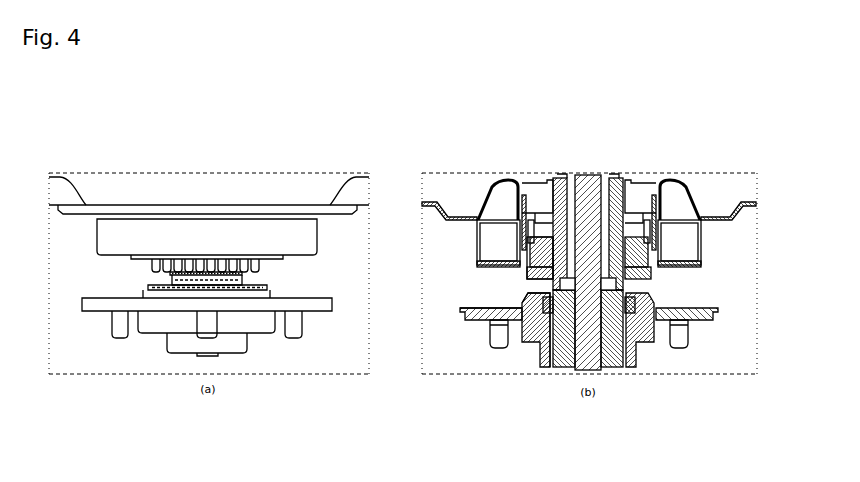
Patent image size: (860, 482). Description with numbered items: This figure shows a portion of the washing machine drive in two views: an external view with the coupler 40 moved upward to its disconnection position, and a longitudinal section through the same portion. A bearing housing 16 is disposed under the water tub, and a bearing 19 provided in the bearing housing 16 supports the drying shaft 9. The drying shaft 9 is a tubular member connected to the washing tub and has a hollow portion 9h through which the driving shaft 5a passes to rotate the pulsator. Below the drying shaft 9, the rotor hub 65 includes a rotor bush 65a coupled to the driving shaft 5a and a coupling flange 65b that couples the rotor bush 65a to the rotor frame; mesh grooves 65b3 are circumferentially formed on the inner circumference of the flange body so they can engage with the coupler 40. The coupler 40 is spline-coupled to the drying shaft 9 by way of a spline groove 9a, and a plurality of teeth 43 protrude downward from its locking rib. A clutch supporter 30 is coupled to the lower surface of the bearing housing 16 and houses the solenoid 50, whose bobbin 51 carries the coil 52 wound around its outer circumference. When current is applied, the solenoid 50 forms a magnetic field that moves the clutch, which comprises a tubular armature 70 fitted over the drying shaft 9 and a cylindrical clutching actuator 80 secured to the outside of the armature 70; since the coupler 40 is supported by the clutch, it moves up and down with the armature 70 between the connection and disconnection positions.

The bearing housing 16 is at (158, 188).
The clutch supporter 30 is at (178, 238).
The coupler 40 is at (247, 259).
The rotor hub 65 is at (210, 303).
The bearing 19 is at (534, 197).
The hollow portion 9h is at (571, 190).
The spline groove 9a is at (636, 213).
The drying shaft 9 is at (523, 296).
The shaft 5a is at (575, 367).
The solenoid 50 is at (399, 254).
The bobbin 51 is at (530, 275).
The coil 52 is at (513, 258).
The teeth 43 is at (510, 310).
The mesh grooves 65b3 is at (522, 327).
The clutching actuator 80 is at (663, 235).
The armature 70 is at (662, 258).
The coupling flange 65b is at (520, 343).
The rotor bush 65a is at (540, 360).